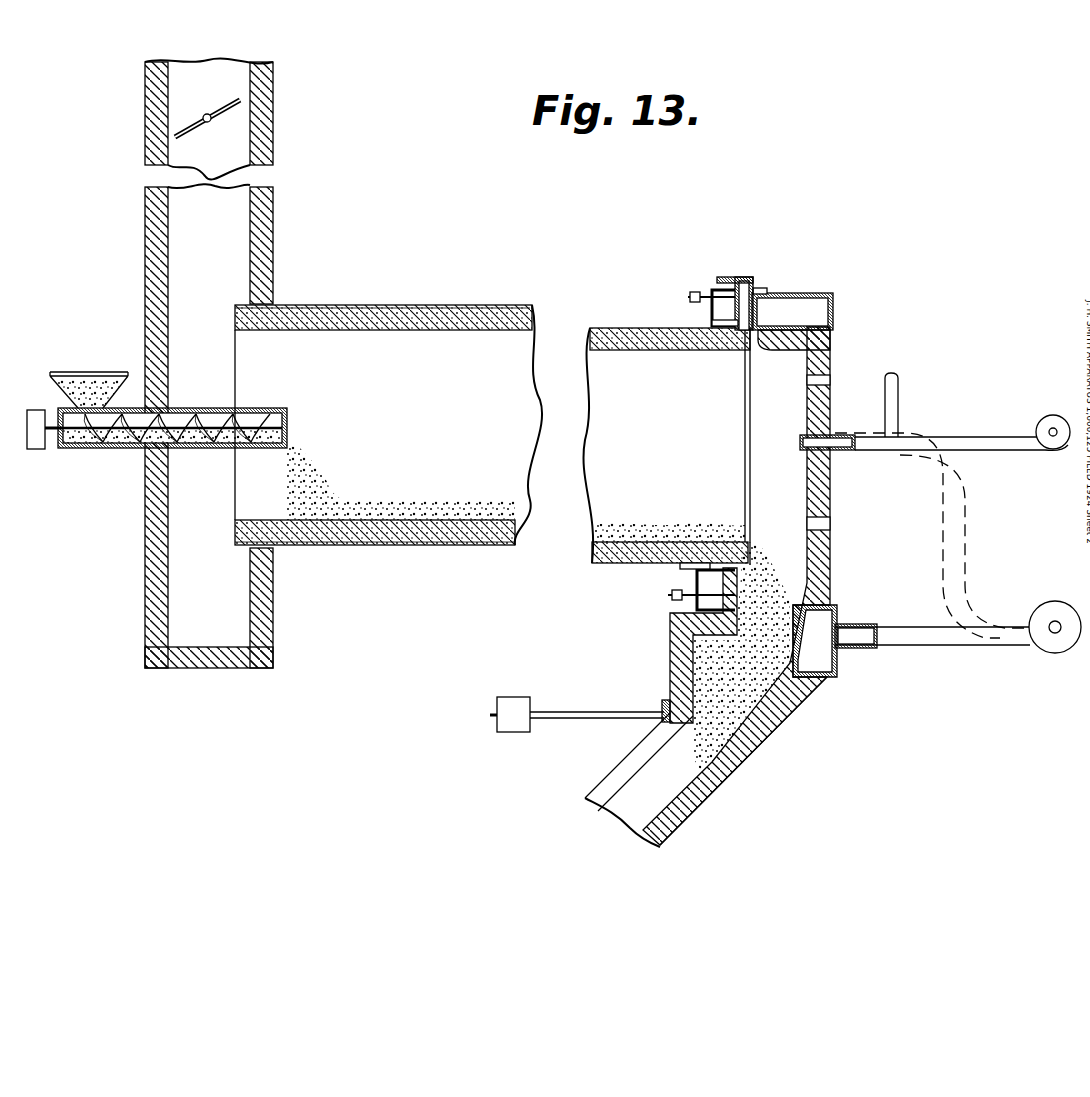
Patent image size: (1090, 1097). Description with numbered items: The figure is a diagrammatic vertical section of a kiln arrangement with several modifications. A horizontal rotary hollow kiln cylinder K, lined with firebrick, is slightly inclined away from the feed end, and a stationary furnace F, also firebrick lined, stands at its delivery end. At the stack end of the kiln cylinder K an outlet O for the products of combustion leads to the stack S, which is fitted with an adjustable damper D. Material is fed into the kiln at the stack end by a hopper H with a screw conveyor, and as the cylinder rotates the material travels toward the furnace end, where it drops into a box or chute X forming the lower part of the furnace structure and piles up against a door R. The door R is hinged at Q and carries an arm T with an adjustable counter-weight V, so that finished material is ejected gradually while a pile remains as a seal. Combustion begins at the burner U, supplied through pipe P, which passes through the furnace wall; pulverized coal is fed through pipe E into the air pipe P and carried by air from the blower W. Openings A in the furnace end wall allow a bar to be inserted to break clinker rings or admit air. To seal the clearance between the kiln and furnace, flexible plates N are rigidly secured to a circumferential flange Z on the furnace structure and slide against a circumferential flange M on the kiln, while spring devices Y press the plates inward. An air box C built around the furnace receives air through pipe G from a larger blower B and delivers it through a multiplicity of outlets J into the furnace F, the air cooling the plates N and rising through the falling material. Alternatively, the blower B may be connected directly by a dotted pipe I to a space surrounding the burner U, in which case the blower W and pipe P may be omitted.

The adjustable damper D is at (187, 133).
The stack S is at (147, 243).
The hopper H is at (80, 376).
The outlet O is at (233, 503).
The rotary hollow kiln cylinder K is at (423, 312).
The spring devices Y is at (718, 292).
The circumferential flange Z is at (738, 276).
The outlets J is at (772, 296).
The air box C is at (818, 305).
The circumferential flange M is at (716, 322).
The flexible plates N is at (705, 297).
The channel L is at (740, 335).
The openings A is at (820, 381).
The pipe E is at (900, 395).
The burner U is at (803, 443).
The air pipe P is at (989, 447).
The blower W is at (1053, 420).
The pipe I is at (935, 535).
The stationary furnace F is at (815, 572).
The adjustable counter-weight V is at (512, 697).
The arm T is at (597, 699).
The hinge Q is at (666, 706).
The box or chute X is at (778, 724).
The door R is at (730, 770).
The pipe G is at (950, 645).
The blower B is at (1055, 654).